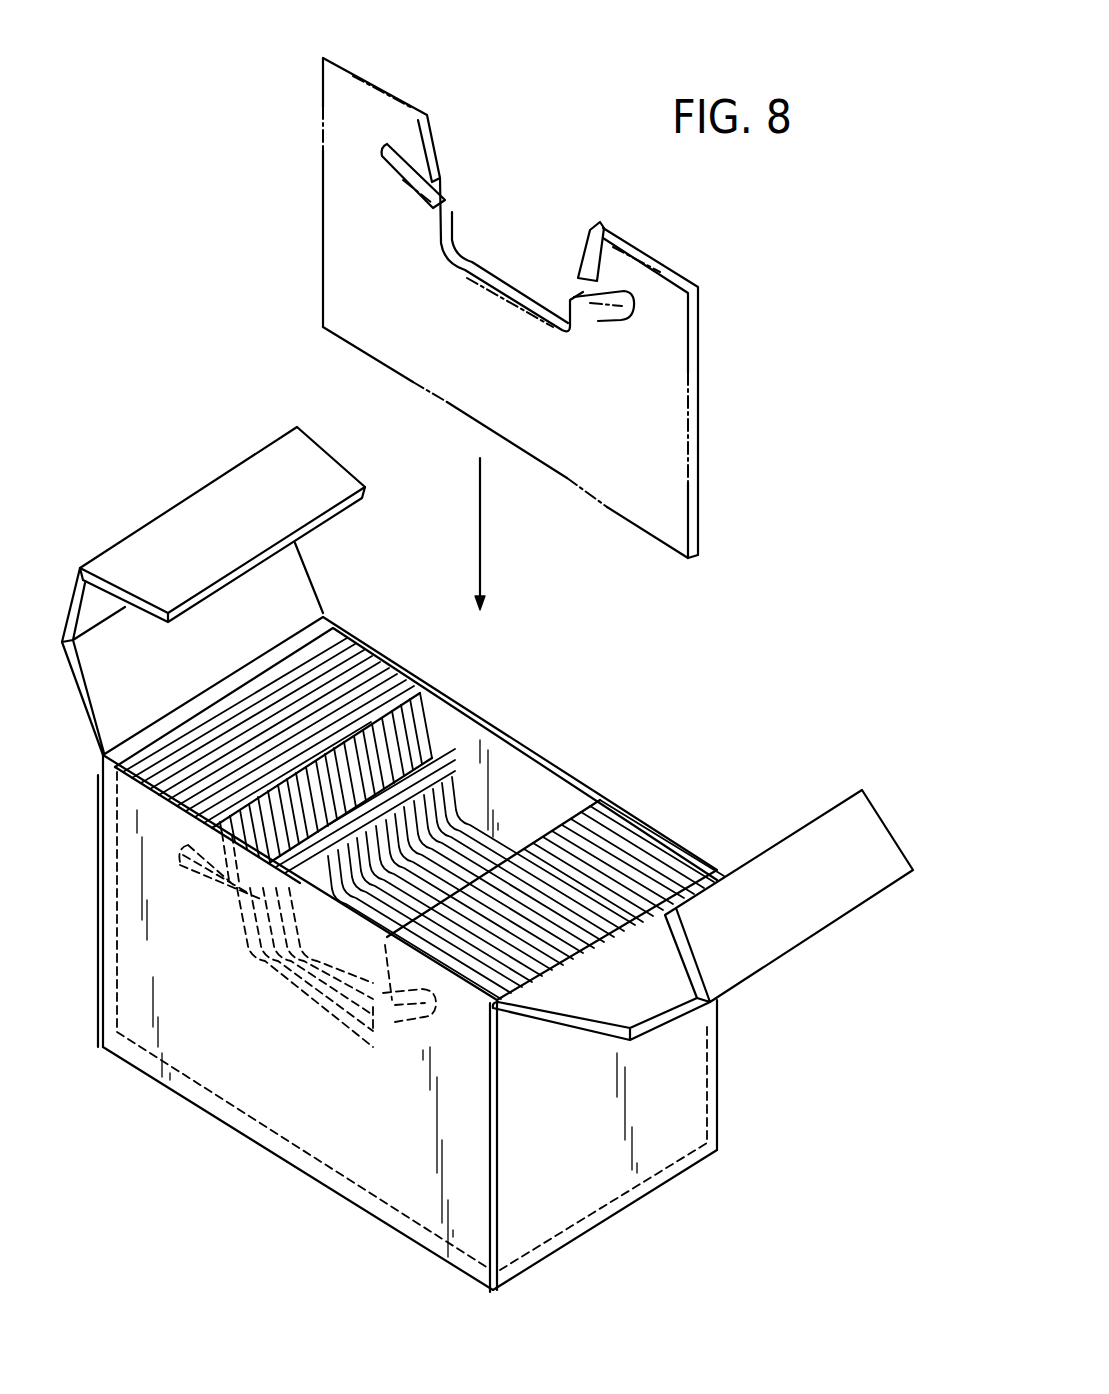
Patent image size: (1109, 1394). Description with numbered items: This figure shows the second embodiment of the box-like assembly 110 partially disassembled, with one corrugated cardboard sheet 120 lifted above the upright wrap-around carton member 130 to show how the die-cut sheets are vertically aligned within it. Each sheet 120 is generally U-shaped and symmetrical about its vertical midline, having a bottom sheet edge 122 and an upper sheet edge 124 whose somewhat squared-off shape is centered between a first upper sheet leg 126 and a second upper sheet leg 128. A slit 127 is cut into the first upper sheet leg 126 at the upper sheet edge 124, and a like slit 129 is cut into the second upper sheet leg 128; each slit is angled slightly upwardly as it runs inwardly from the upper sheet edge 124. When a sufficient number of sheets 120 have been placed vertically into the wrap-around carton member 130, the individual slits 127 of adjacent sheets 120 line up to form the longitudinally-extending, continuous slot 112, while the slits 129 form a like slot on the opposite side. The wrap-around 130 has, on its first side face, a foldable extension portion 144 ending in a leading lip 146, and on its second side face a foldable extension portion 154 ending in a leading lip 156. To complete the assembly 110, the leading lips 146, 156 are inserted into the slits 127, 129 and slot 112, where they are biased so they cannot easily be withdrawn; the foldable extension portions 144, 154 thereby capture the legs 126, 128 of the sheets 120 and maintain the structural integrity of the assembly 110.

The assembly 110 is at (803, 543).
The slot 112 is at (438, 770).
The corrugated cardboard sheet 120 is at (640, 402).
The bottom sheet edge 122 is at (561, 478).
The upper sheet edge 124 is at (490, 278).
The first upper sheet leg 126 is at (370, 107).
The slit 127 is at (438, 195).
The second upper sheet leg 128 is at (656, 298).
The slit 129 is at (593, 282).
The wrap-around carton member 130 is at (683, 1117).
The foldable extension portion 144 is at (107, 687).
The leading lip 146 is at (303, 490).
The foldable extension portion 154 is at (587, 990).
The leading lip 156 is at (875, 843).